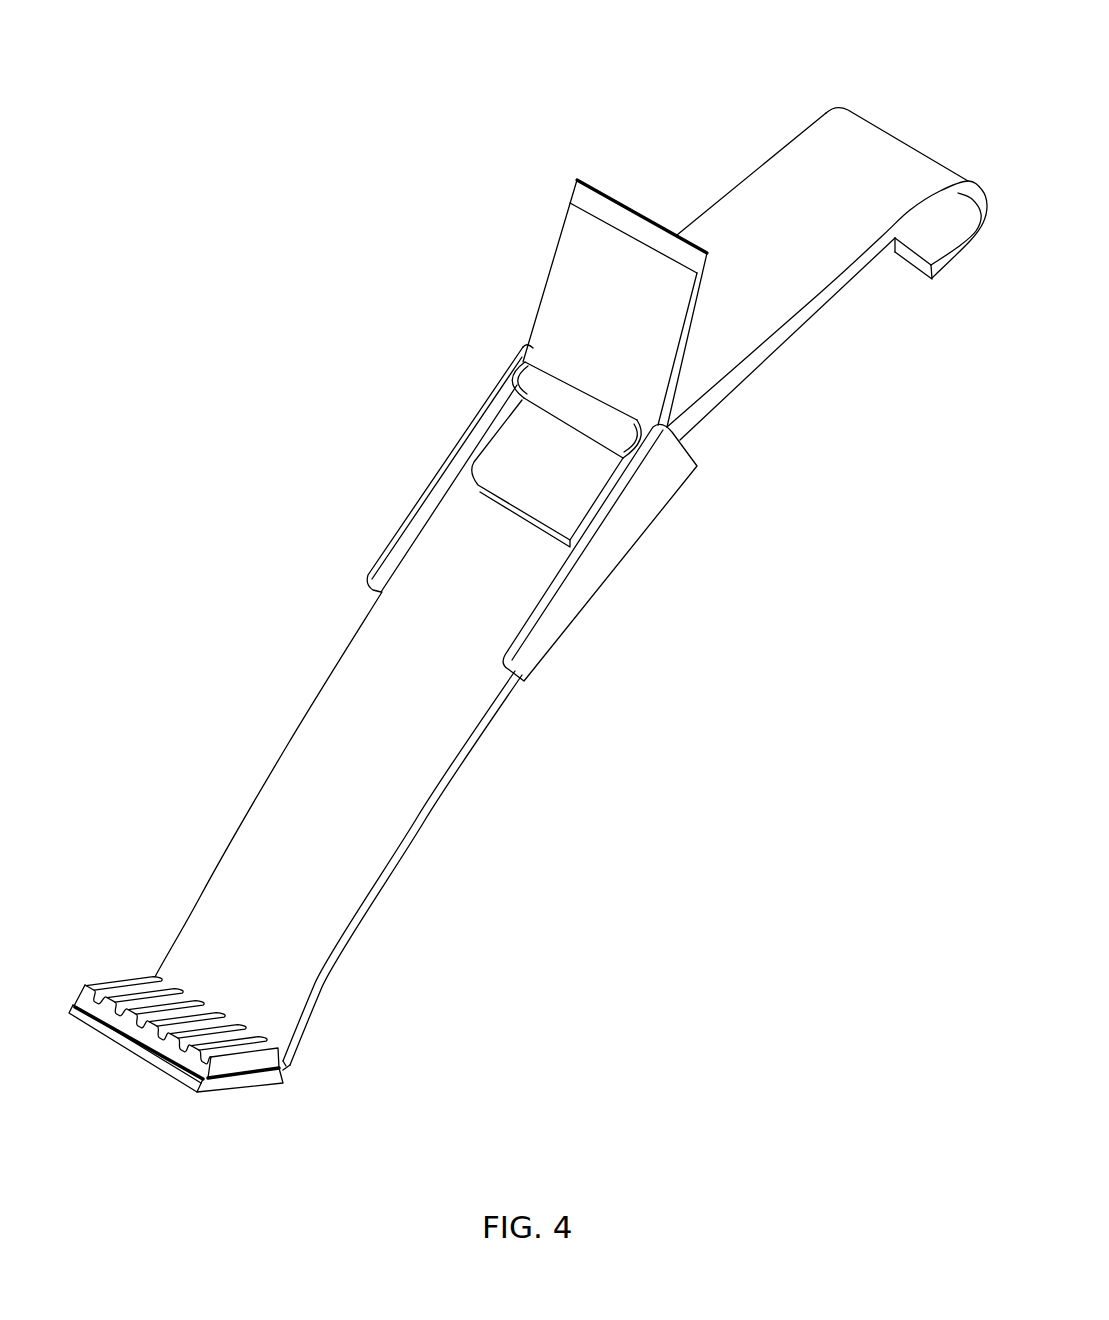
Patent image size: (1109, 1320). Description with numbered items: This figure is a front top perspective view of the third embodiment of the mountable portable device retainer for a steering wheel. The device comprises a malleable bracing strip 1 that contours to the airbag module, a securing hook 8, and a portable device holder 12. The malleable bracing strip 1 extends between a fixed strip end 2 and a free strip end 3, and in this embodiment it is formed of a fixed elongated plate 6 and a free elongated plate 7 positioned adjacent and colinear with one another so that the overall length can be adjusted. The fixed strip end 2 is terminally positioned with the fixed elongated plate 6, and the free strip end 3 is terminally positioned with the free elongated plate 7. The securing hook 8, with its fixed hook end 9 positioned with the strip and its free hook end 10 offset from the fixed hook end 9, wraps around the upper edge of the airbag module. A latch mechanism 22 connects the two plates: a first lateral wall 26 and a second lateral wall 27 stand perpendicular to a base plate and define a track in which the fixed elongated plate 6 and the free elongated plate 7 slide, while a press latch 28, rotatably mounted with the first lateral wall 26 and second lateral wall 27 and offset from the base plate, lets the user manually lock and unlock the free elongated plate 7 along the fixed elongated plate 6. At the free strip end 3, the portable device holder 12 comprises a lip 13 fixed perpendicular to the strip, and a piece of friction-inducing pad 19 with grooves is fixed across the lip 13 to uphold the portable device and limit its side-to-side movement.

The malleable bracing strip 1 is at (754, 135).
The fixed strip end 2 is at (878, 253).
The free strip end 3 is at (287, 1063).
The fixed elongated plate 6 is at (711, 183).
The free elongated plate 7 is at (282, 736).
The securing hook 8 is at (924, 125).
The fixed hook end 9 is at (895, 240).
The free hook end 10 is at (928, 283).
The portable device holder 12 is at (110, 1072).
The lip 13 is at (212, 1099).
The piece of friction-inducing pad 19 is at (114, 968).
The latch mechanism 22 is at (527, 213).
The first lateral wall 26 is at (407, 522).
The second lateral wall 27 is at (515, 633).
The press latch 28 is at (617, 203).